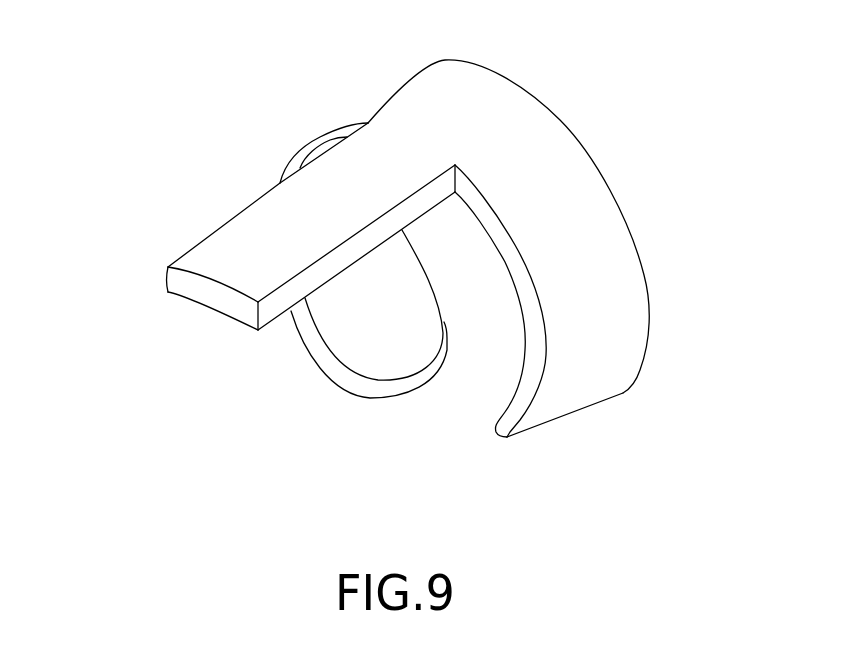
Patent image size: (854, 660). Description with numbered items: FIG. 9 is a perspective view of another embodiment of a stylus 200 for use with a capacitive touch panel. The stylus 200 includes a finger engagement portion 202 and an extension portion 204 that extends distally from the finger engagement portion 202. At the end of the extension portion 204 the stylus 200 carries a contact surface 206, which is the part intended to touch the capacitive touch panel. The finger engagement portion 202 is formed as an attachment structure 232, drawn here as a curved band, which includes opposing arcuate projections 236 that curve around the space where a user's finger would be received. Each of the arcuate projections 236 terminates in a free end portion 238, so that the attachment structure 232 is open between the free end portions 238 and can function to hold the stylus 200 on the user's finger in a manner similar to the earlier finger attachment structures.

The stylus 200 is at (444, 281).
The finger engagement portion 202 is at (681, 258).
The extension portion 204 is at (204, 344).
The contact surface 206 is at (190, 290).
The attachment structure 232 is at (685, 312).
The arcuate projections 236 is at (342, 336).
The free end portions 238 is at (493, 427).